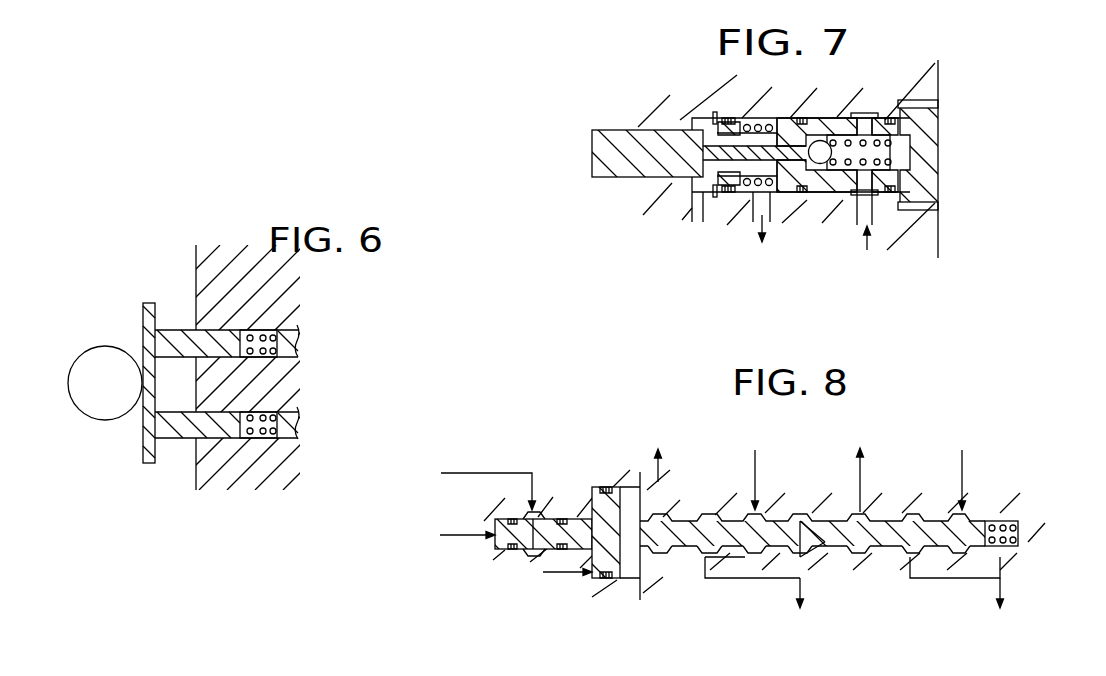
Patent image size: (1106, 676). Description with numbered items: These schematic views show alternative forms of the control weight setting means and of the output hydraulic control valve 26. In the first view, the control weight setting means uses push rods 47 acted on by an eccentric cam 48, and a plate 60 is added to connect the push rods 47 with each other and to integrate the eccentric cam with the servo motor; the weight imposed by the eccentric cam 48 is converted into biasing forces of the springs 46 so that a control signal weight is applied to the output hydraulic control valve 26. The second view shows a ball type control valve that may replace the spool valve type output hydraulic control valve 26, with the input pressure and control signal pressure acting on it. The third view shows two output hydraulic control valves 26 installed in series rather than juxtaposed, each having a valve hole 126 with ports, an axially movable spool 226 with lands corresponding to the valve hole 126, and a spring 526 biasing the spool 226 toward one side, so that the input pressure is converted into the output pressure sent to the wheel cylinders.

In FIG. 7, the output hydraulic control valve 26 is at (620, 97).
In FIG. 8, the output hydraulic control valve 26 is at (546, 438).
In FIG. 6, the spring 46 is at (262, 330).
In FIG. 6, the push rod 47 is at (227, 333).
In FIG. 6, the eccentric cam 48 is at (93, 347).
In FIG. 6, the plate 60 is at (160, 303).
In FIG. 8, the valve hole 126 is at (675, 522).
In FIG. 8, the spool 226 is at (690, 537).
In FIG. 8, the spring 526 is at (1020, 517).